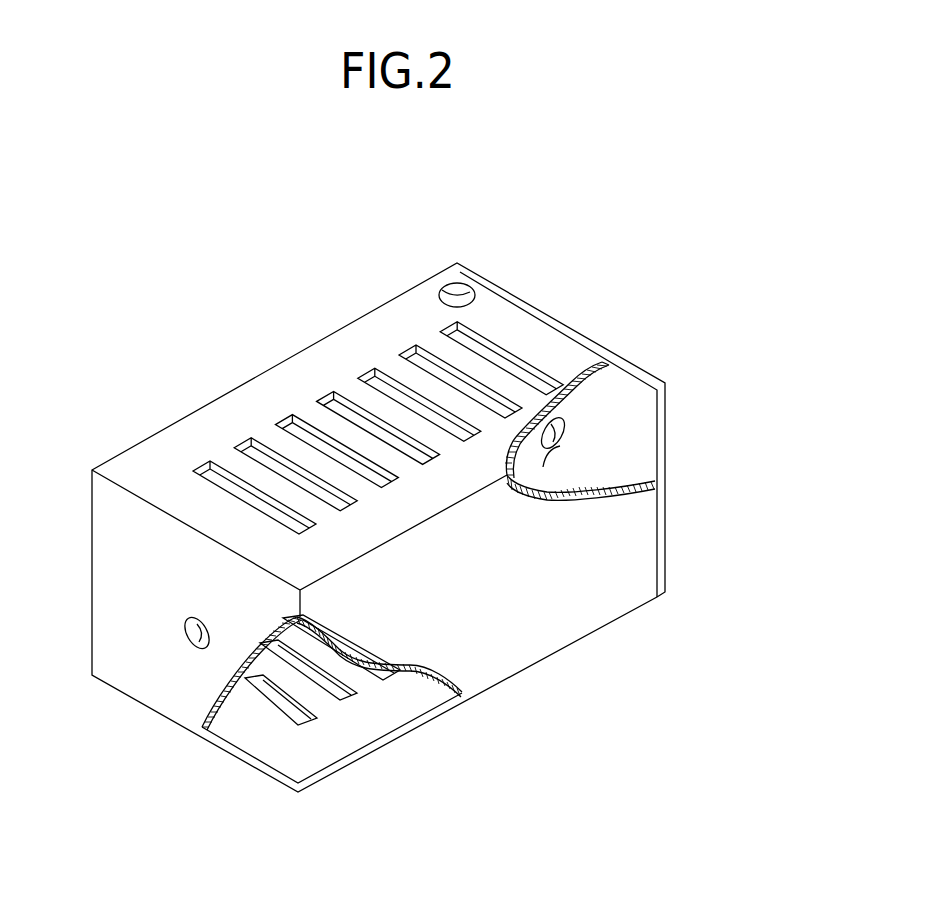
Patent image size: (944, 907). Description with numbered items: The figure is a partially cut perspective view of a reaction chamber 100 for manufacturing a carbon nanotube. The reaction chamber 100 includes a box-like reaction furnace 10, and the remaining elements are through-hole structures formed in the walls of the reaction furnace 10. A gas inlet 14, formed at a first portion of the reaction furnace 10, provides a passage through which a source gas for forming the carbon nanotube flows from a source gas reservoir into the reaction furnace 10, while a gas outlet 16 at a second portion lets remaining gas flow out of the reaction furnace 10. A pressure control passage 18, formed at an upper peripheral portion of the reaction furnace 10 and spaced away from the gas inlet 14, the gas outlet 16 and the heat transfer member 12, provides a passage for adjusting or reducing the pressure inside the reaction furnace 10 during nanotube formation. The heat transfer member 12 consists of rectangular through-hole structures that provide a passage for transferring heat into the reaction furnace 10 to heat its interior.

The reaction chamber 100 is at (428, 183).
The reaction furnace 10 is at (576, 624).
The heat transfer member 12 is at (252, 452).
The gas inlet 14 is at (192, 648).
The gas outlet 16 is at (547, 467).
The pressure control passage 18 is at (460, 291).